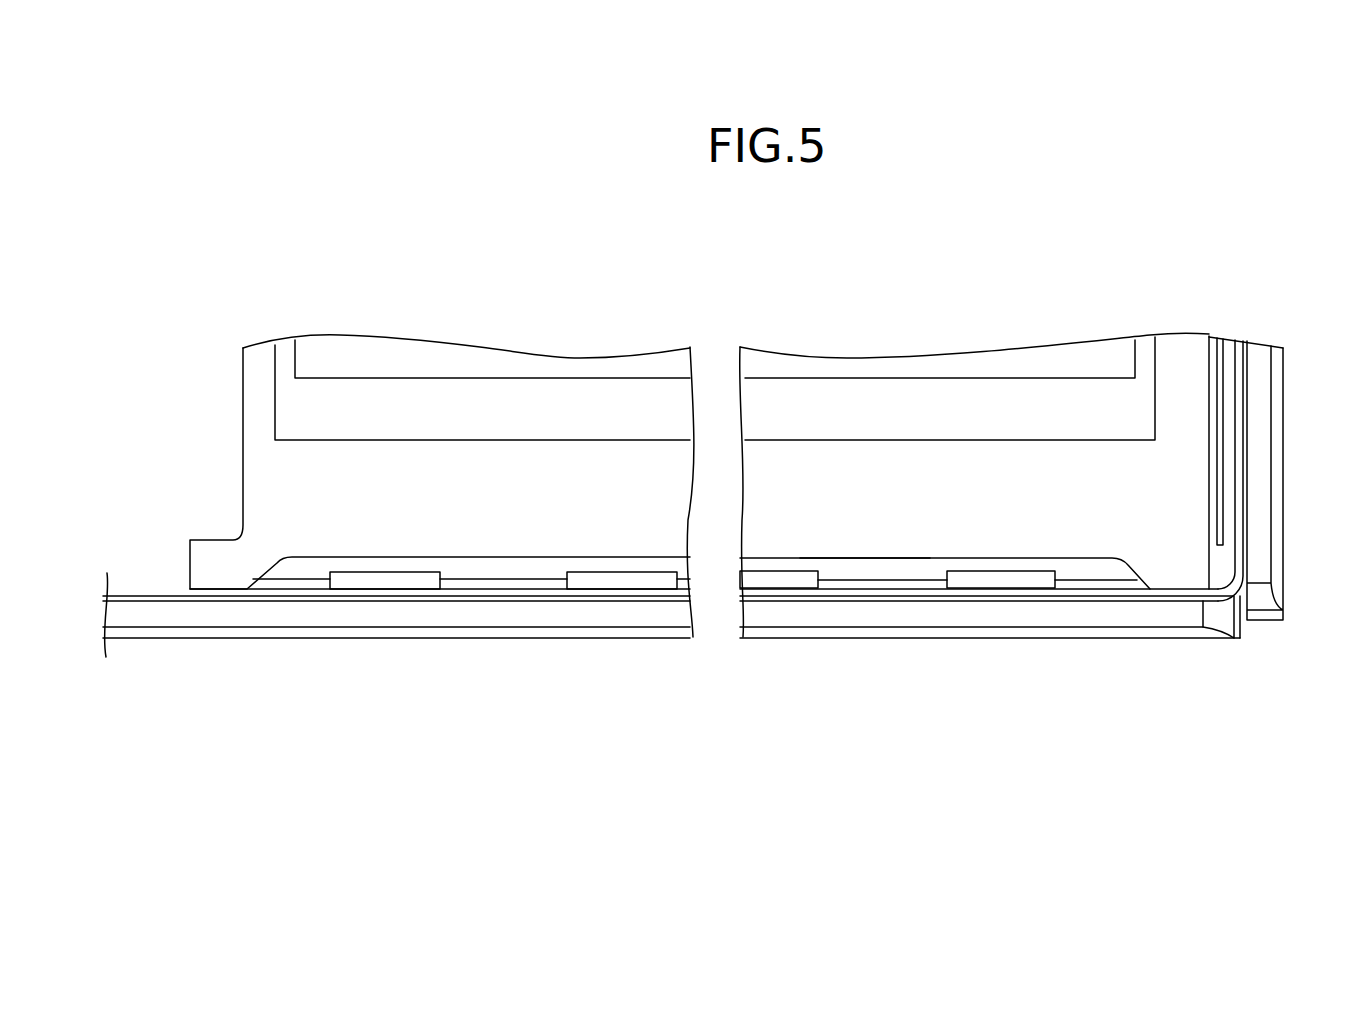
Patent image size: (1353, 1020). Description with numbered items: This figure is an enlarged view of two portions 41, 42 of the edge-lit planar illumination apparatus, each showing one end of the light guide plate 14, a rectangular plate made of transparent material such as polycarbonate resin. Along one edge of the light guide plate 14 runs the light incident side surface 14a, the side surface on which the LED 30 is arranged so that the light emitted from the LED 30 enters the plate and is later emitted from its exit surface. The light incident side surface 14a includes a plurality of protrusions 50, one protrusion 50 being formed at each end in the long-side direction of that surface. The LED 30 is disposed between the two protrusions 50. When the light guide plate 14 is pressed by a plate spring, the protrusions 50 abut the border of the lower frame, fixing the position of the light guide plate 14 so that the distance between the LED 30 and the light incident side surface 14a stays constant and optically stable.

The portion 41 is at (492, 312).
The portion 42 is at (940, 312).
The light guide plate 14 is at (1183, 363).
The light incident side surface 14a is at (864, 566).
The LED 30 is at (380, 578).
The protrusion 50 is at (212, 570).